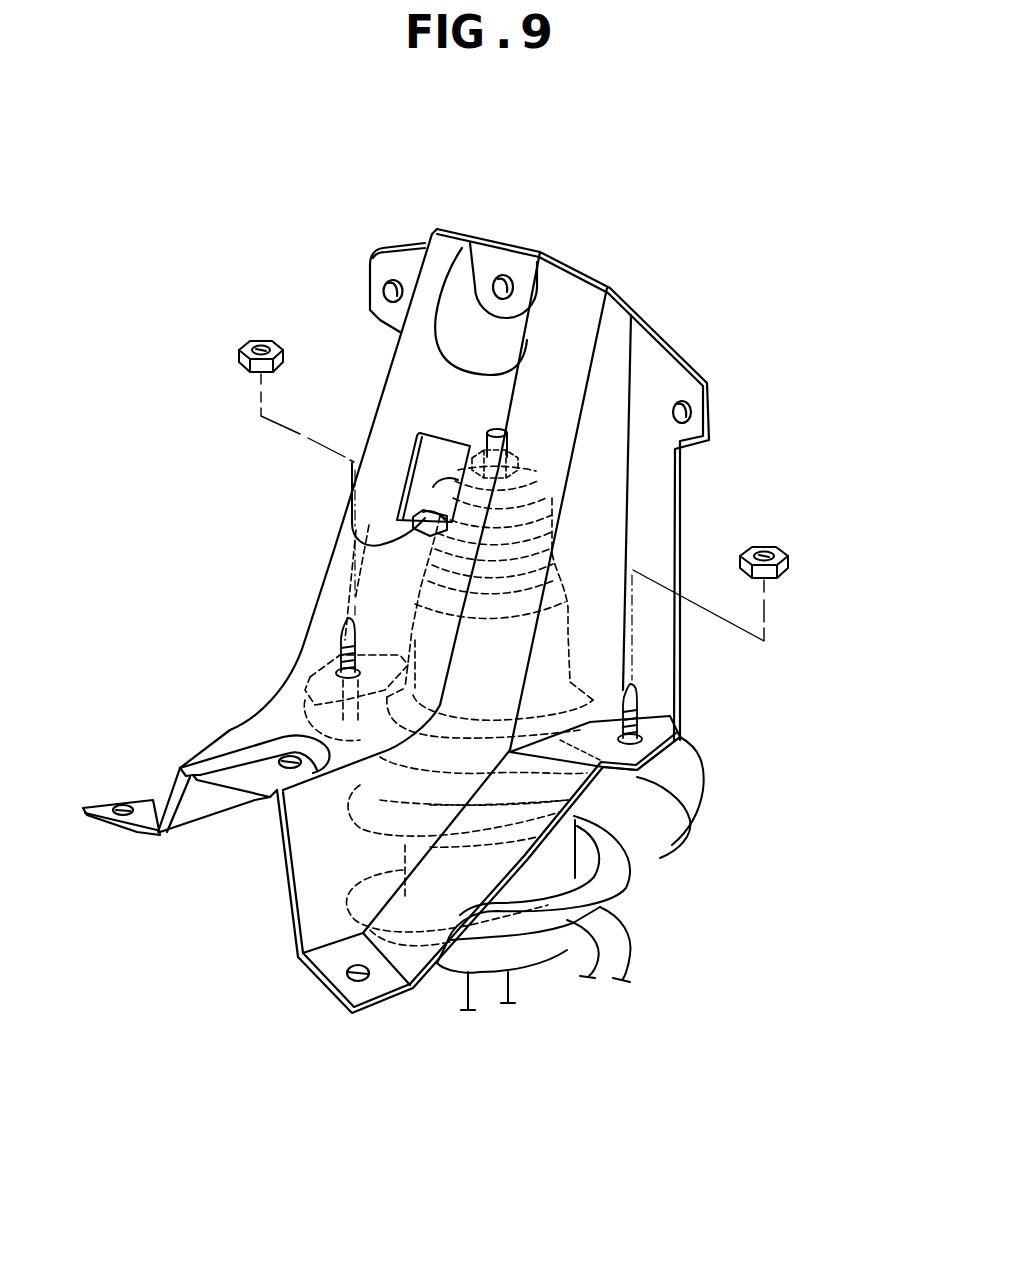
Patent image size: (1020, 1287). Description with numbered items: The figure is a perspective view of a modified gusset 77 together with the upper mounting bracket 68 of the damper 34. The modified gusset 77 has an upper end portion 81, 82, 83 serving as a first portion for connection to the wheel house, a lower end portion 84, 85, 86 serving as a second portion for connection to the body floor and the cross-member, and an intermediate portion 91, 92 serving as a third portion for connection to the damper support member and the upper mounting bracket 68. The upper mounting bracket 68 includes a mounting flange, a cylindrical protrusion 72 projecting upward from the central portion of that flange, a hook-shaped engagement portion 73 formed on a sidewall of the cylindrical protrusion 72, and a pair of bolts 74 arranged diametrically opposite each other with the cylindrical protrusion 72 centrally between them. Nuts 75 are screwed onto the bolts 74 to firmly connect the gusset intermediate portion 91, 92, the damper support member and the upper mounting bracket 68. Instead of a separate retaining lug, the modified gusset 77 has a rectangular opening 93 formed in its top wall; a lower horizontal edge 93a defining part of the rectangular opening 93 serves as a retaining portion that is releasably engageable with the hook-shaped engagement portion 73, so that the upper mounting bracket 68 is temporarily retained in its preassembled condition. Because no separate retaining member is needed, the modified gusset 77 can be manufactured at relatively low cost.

The modified gusset 77 is at (195, 215).
The upper end portion 81 is at (394, 266).
The upper end portion 82 is at (507, 258).
The upper end portion 83 is at (670, 383).
The lower end portion 84 is at (112, 800).
The lower end portion 85 is at (377, 988).
The lower end portion 86 is at (245, 768).
The nut 75 is at (262, 336).
The bolt 74 is at (345, 620).
The rectangular opening 93 is at (437, 435).
The lower horizontal edge 93a is at (375, 543).
The hook-shaped engagement portion 73 is at (427, 517).
The cylindrical protrusion 72 is at (560, 575).
The upper mounting bracket 68 is at (572, 532).
The intermediate portion 91 is at (330, 660).
The intermediate portion 92 is at (655, 752).
The damper 34 is at (650, 922).